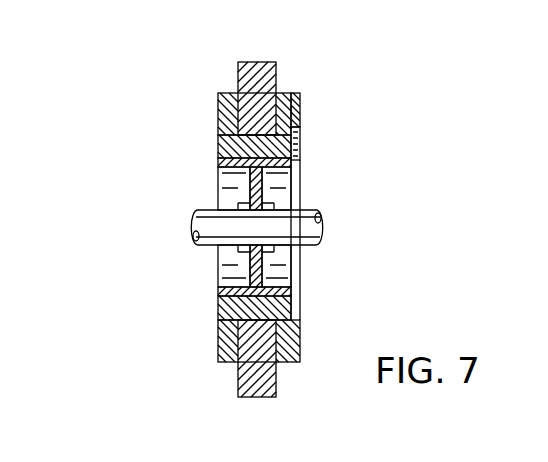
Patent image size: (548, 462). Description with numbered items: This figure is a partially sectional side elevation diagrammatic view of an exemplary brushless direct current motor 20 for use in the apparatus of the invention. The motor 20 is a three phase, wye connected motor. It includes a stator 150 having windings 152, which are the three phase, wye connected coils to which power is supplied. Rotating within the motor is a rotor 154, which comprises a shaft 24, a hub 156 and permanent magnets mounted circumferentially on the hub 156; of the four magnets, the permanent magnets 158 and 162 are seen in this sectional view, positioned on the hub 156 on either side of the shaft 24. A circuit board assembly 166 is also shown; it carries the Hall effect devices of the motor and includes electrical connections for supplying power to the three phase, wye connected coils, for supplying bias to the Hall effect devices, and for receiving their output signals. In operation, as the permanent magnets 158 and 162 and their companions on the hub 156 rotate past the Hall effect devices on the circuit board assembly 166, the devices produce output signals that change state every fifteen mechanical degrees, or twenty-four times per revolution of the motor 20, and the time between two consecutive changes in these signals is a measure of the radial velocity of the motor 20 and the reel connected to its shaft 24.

The stator 150 is at (237, 78).
The windings 152 is at (217, 112).
The permanent magnet 158 is at (218, 143).
The brushless direct current motor 20 is at (153, 214).
The rotor 154 is at (205, 263).
The permanent magnet 162 is at (220, 308).
The circuit board assembly 166 is at (300, 118).
The hub 156 is at (300, 158).
The shaft 24 is at (312, 210).